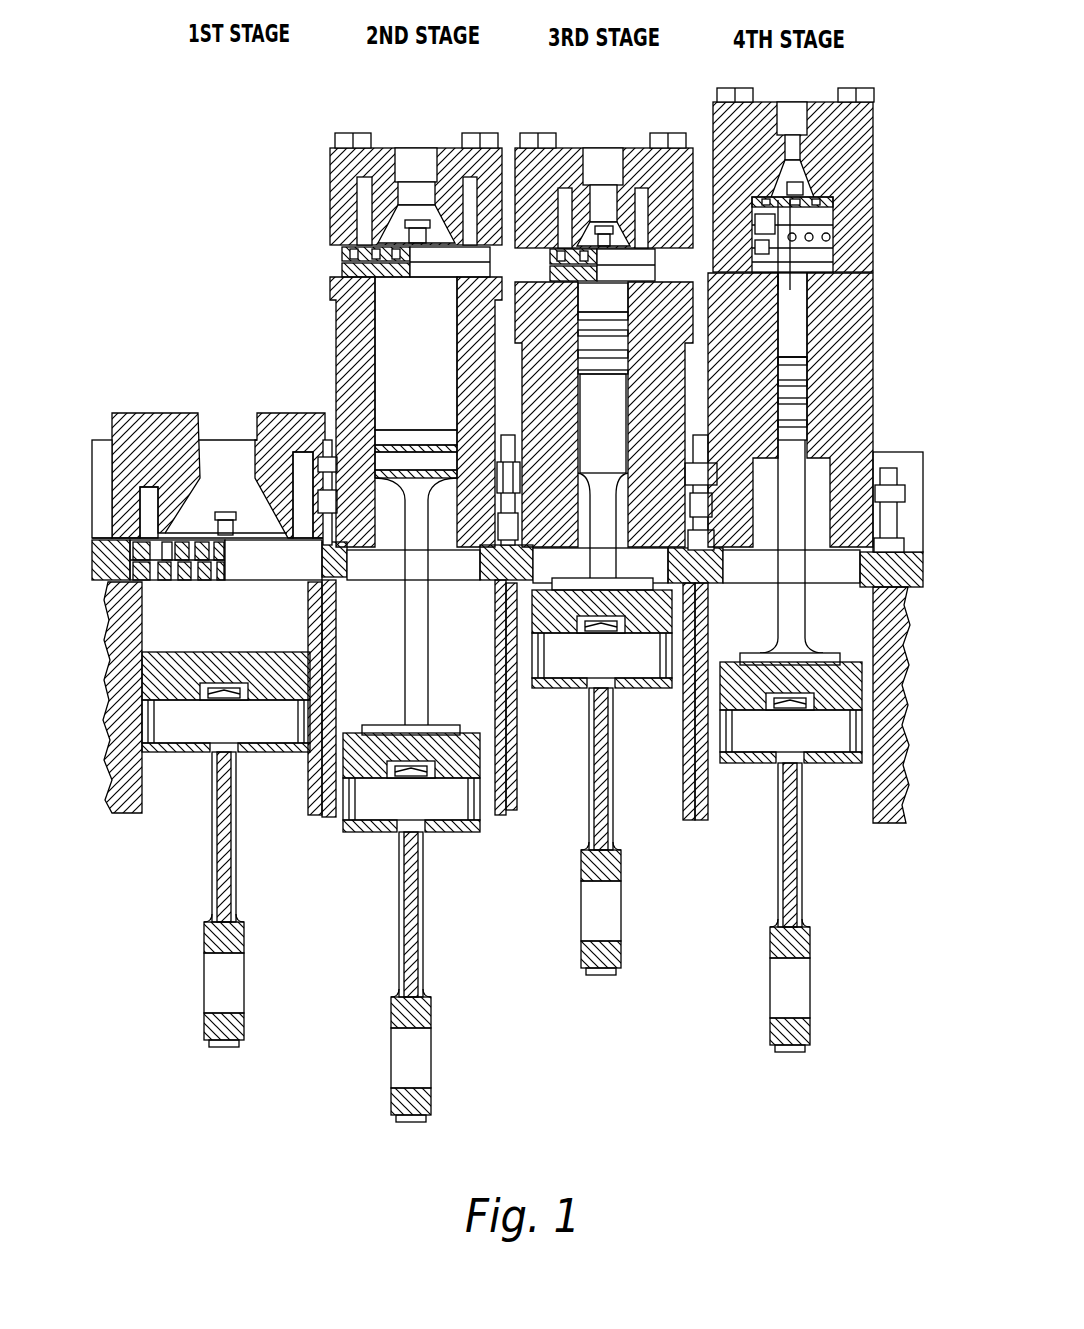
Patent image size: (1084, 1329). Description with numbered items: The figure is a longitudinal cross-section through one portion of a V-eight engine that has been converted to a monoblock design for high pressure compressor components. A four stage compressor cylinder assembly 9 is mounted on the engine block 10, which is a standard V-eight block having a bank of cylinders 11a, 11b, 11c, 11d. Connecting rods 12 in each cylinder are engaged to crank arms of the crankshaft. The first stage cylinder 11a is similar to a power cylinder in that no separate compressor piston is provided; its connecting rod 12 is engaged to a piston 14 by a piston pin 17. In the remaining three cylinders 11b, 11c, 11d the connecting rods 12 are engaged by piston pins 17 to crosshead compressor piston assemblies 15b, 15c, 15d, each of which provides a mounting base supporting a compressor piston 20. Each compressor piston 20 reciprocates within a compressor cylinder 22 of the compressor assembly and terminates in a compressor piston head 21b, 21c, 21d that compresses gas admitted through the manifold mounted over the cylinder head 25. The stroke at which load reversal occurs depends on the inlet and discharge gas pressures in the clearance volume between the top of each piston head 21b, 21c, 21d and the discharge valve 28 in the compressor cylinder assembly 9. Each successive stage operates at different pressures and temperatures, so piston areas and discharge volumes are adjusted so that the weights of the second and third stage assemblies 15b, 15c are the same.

The four stage compressor cylinder assembly 9 is at (875, 278).
The engine block 10 is at (873, 810).
The first stage cylinder 11a is at (310, 800).
The second stage cylinder 11b is at (496, 655).
The third stage cylinder 11c is at (517, 777).
The fourth stage cylinder 11d is at (685, 792).
The connecting rod 12 is at (205, 980).
The piston 14 is at (193, 757).
The second stage crosshead compressor piston assembly 15b is at (346, 800).
The third stage crosshead compressor piston assembly 15c is at (575, 690).
The fourth stage crosshead compressor piston assembly 15d is at (760, 765).
The piston pin 17 is at (150, 760).
The compressor piston 20 is at (400, 618).
The second stage compressor piston head 21b is at (403, 440).
The third stage compressor piston head 21c is at (603, 300).
The fourth stage compressor piston head 21d is at (793, 402).
The compressor cylinder 22 is at (403, 352).
The cylinder head 25 is at (880, 127).
The discharge valve 28 is at (343, 258).